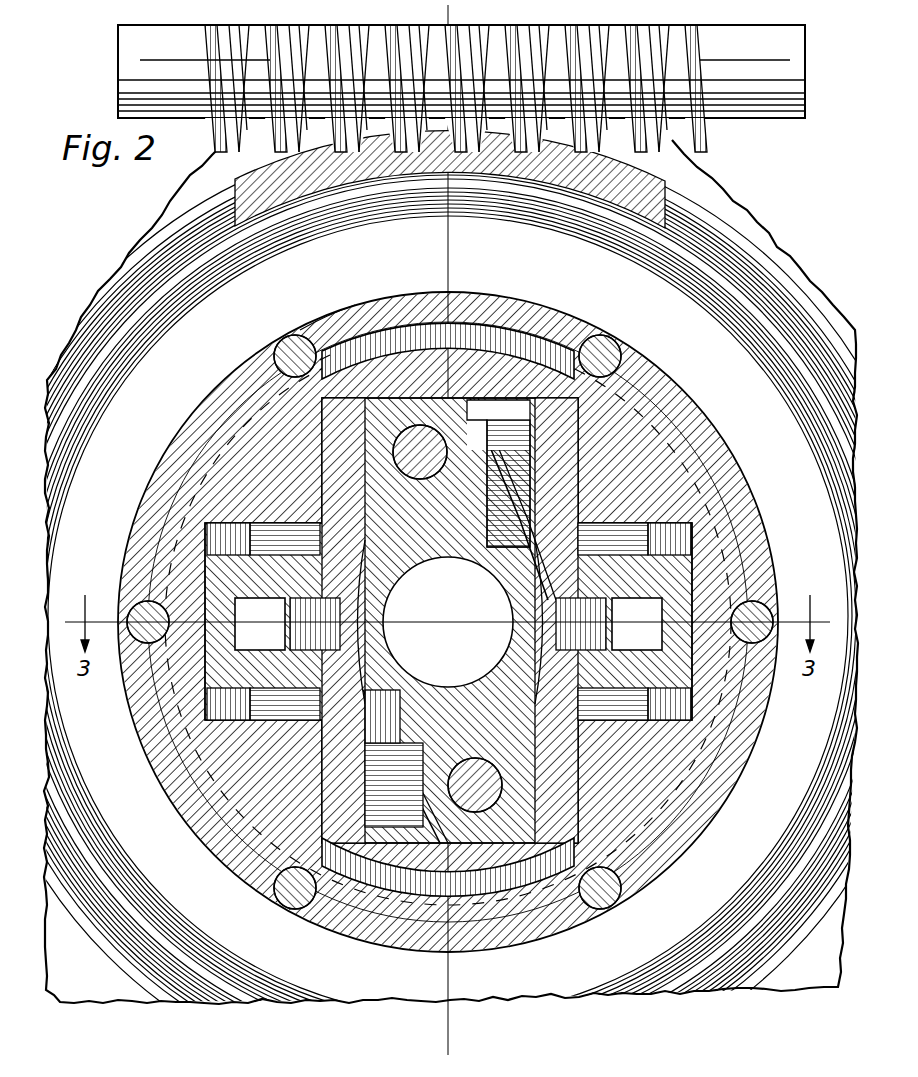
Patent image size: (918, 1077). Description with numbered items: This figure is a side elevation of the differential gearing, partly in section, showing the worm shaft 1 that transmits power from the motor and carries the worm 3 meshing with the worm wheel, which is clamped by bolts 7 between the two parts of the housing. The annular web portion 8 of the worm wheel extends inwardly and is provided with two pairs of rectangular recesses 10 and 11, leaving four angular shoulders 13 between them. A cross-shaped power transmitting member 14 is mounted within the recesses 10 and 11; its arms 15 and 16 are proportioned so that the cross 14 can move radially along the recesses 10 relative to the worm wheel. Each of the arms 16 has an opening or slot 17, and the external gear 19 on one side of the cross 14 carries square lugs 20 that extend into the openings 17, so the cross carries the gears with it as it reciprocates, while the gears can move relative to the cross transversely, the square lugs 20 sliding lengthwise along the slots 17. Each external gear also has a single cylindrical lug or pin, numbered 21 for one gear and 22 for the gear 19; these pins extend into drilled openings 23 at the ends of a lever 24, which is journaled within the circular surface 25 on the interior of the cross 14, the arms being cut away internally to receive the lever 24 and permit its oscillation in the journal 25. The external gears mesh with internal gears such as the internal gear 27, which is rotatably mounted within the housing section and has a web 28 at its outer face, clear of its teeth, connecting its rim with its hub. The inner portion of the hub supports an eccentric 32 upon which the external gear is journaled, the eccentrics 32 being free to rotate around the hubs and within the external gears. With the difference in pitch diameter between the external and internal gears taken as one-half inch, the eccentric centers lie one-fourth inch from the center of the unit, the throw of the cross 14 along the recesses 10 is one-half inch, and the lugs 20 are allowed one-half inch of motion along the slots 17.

The worm shaft 1 is at (445, 12).
The worm 3 is at (635, 100).
The bolts 7 is at (275, 345).
The annular web portion 8 is at (520, 448).
The rectangular recesses 10 is at (585, 455).
The rectangular recesses 11 is at (280, 525).
The angular shoulders 13 is at (275, 465).
The cross-shaped power transmitting member 14 is at (520, 320).
The arms 15 is at (380, 312).
The arms 16 is at (140, 680).
The opening or slot 17 is at (770, 600).
The external gear 19 is at (498, 473).
The square lugs 20 is at (450, 622).
The cylindrical lug or pin 21 is at (468, 325).
The cylindrical lug or pin 22 is at (520, 920).
The drilled openings 23 is at (438, 330).
The lever 24 is at (448, 622).
The circular surface 25 is at (419, 584).
The internal gear 27 is at (650, 700).
The webs 28 is at (700, 410).
The eccentrics 32 is at (340, 636).